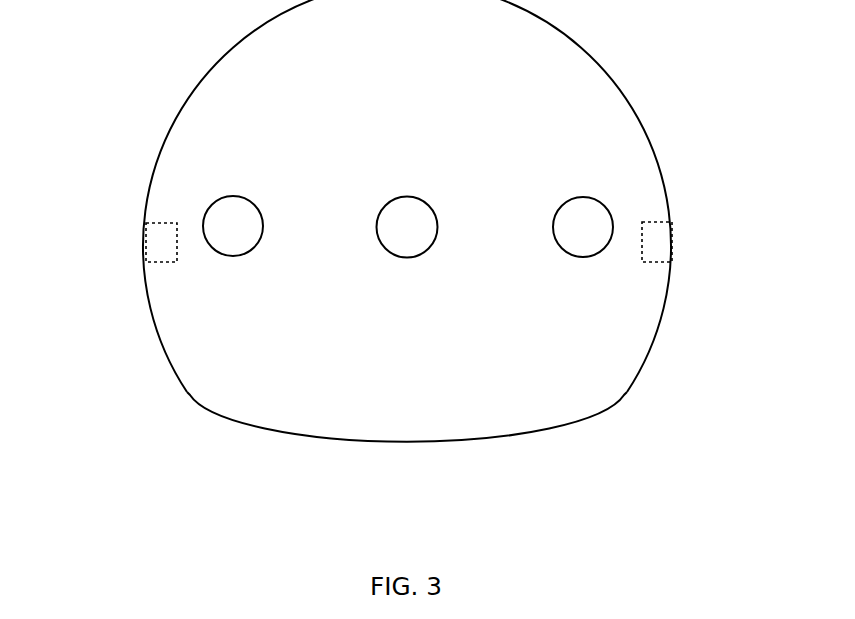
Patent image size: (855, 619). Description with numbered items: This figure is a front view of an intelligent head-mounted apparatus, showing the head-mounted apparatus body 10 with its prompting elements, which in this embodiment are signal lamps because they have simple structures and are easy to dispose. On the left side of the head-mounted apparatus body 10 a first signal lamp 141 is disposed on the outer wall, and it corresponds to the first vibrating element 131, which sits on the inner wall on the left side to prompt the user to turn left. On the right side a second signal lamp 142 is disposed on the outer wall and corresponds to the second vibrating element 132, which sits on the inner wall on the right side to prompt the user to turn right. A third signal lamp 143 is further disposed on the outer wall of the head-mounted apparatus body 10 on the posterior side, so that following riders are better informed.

The head-mounted apparatus body 10 is at (407, 446).
The first vibrating element 131 is at (145, 243).
The second vibrating element 132 is at (673, 235).
The first signal lamp 141 is at (234, 256).
The second signal lamp 142 is at (582, 257).
The third signal lamp 143 is at (407, 196).